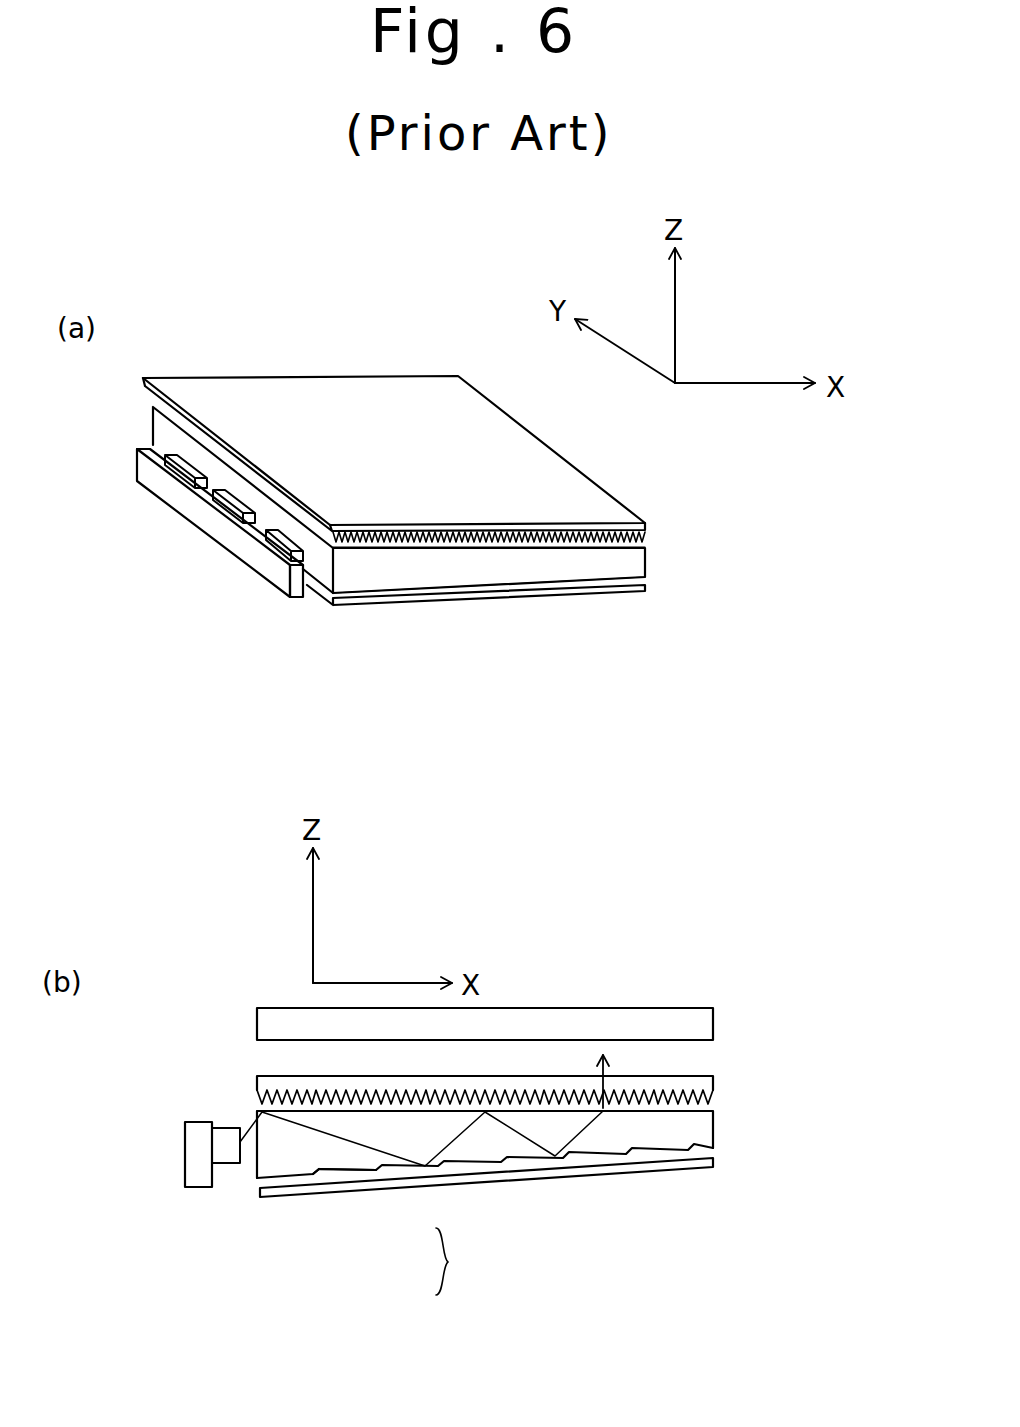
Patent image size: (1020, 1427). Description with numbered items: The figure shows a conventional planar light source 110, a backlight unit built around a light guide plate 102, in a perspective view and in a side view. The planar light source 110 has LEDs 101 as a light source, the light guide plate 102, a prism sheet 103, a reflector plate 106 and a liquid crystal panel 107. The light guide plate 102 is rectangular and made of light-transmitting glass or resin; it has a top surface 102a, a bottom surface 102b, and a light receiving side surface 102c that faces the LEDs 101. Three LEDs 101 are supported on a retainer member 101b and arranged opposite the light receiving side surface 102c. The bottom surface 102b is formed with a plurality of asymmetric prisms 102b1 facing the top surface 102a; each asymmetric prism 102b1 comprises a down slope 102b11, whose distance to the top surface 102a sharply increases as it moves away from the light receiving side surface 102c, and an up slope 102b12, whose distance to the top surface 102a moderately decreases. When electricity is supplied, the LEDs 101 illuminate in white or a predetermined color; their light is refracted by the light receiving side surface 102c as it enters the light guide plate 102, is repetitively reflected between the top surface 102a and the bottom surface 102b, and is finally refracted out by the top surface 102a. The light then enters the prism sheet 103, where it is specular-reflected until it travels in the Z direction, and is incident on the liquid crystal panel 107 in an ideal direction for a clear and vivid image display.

The planar light source 110 is at (378, 343).
The liquid crystal panel 107 is at (663, 1008).
The prism sheet 103 is at (525, 458).
The light guide plate 102 is at (489, 853).
The top surface 102a is at (640, 543).
The bottom surface 102b is at (485, 938).
The asymmetric prism 102b1 is at (491, 1261).
The down slope 102b11 is at (292, 1178).
The up slope 102b12 is at (302, 1182).
The light receiving side surface 102c is at (317, 594).
The reflector plate 106 is at (573, 596).
The LED 101 is at (157, 470).
The retainer member 101b is at (240, 545).